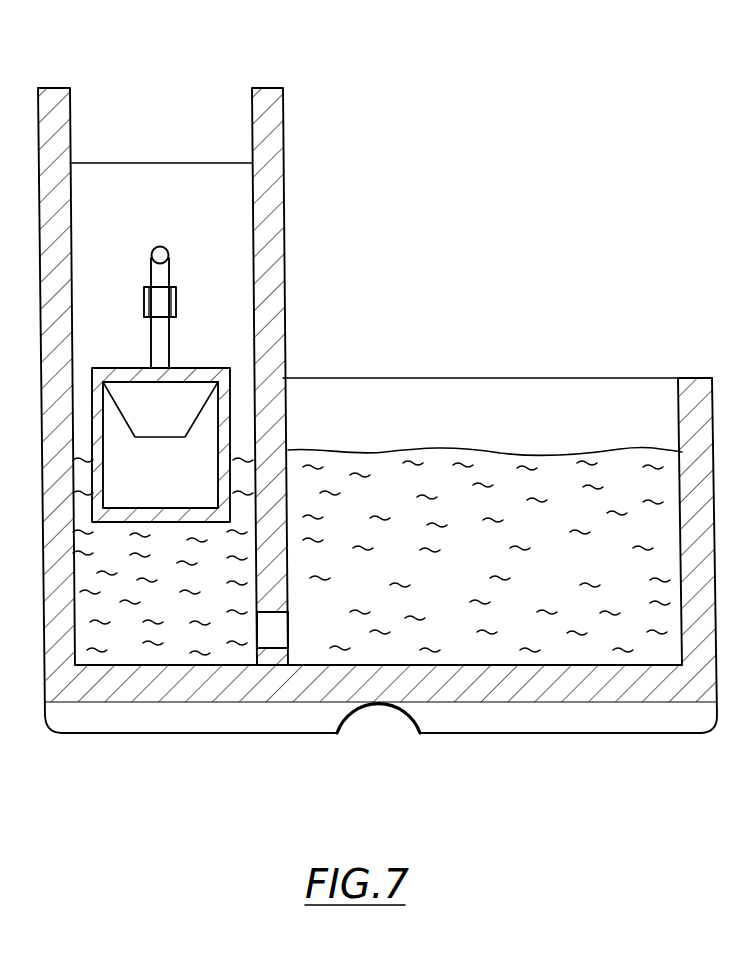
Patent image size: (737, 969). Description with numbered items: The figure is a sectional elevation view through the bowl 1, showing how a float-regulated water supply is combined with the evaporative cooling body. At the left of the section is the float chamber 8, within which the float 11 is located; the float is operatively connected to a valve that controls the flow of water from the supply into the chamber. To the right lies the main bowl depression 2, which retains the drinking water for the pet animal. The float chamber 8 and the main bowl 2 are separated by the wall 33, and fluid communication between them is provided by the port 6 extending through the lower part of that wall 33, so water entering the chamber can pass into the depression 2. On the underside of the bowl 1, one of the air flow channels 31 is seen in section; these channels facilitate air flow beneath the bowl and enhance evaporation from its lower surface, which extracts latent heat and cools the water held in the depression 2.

The bowl 1 is at (499, 298).
The depression 2 is at (472, 428).
The port 6 is at (270, 632).
The float chamber 8 is at (189, 232).
The float 11 is at (143, 490).
The air flow channels 31 is at (382, 722).
The wall 33 is at (286, 317).